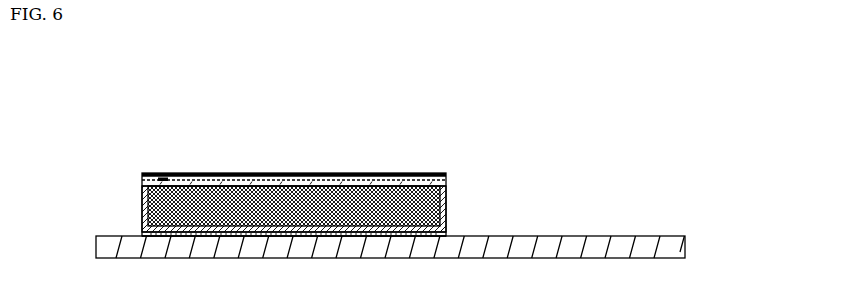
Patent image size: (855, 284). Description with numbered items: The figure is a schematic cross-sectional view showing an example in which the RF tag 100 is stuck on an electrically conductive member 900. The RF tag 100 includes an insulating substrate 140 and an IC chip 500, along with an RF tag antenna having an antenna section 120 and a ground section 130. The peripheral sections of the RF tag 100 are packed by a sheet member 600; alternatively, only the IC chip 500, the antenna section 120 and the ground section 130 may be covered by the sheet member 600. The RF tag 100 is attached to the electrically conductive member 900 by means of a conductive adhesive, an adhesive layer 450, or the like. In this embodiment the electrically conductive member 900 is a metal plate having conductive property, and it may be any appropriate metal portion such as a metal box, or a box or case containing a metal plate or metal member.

The RF tag 100 is at (452, 131).
The antenna section 120 is at (397, 186).
The ground section 130 is at (446, 212).
The insulating substrate 140 is at (268, 205).
The adhesive layer 450 is at (447, 236).
The IC chip 500 is at (164, 178).
The sheet member 600 is at (343, 176).
The electrically conductive member 900 is at (652, 234).